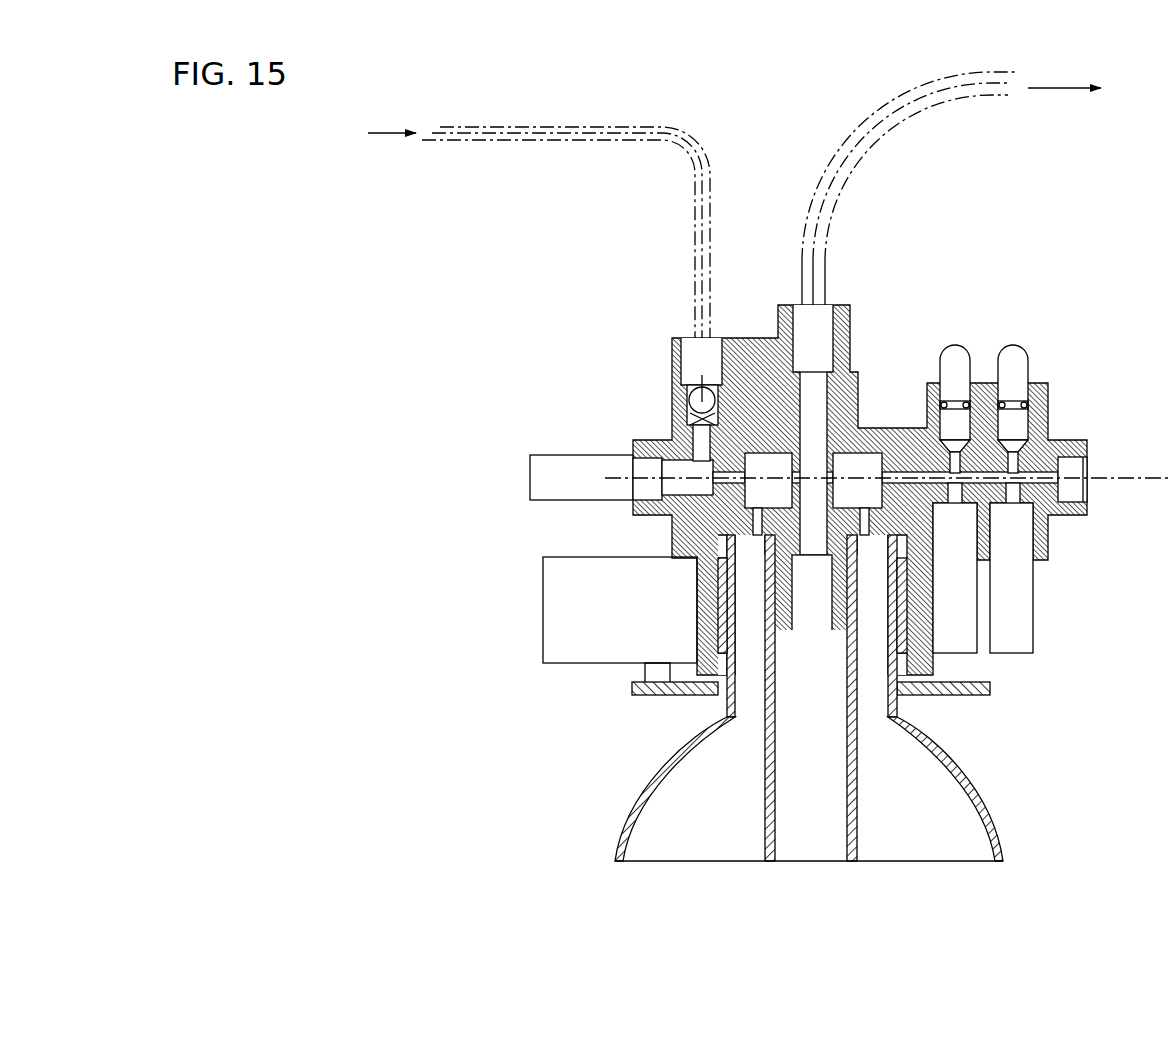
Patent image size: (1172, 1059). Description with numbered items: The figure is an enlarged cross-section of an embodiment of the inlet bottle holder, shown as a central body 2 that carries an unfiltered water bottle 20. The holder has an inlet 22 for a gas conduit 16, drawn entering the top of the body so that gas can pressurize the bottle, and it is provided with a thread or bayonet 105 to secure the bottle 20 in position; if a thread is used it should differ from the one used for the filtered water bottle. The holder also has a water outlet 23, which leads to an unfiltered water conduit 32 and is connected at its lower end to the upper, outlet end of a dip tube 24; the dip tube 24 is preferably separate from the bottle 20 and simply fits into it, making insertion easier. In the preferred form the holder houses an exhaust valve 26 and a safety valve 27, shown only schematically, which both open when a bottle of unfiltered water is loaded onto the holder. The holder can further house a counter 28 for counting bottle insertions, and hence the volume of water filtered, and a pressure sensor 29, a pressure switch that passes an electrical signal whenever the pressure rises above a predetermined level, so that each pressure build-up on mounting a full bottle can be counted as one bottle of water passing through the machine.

The valve body 2 is at (787, 493).
The gas conduit 16 is at (637, 125).
The unfiltered water bottle 20 is at (950, 797).
The inlet 22 is at (693, 336).
The water outlet 23 is at (813, 427).
The dip tube 24 is at (788, 767).
The exhaust valve 26 is at (1003, 616).
The safety valve 27 is at (947, 635).
The counter 28 is at (597, 620).
The pressure sensor 29 is at (568, 479).
The unfiltered water conduit 32 is at (859, 136).
The thread or bayonet 105 is at (719, 607).